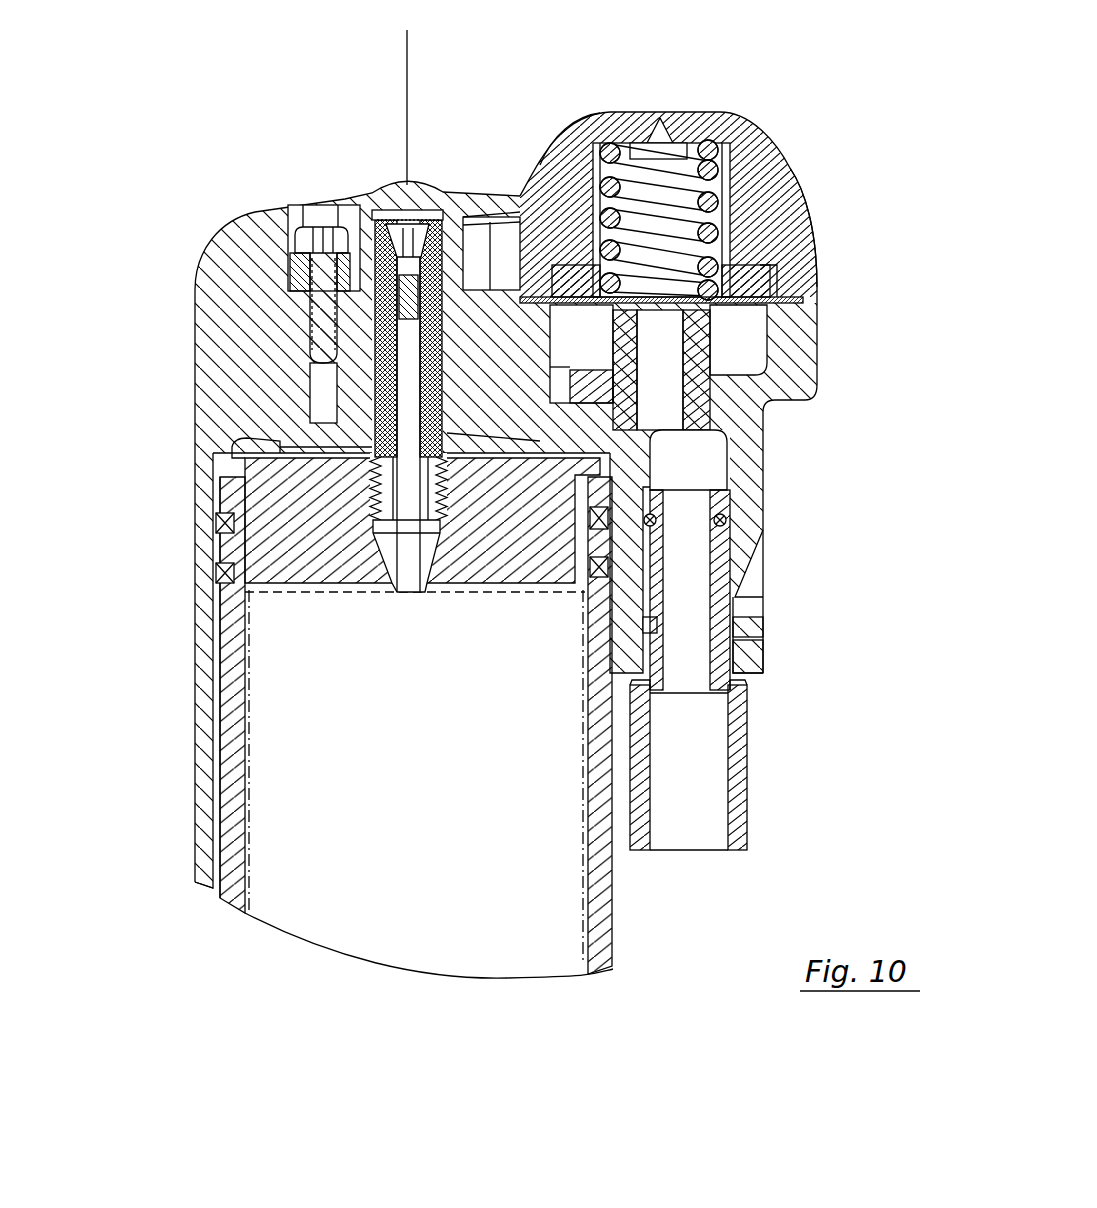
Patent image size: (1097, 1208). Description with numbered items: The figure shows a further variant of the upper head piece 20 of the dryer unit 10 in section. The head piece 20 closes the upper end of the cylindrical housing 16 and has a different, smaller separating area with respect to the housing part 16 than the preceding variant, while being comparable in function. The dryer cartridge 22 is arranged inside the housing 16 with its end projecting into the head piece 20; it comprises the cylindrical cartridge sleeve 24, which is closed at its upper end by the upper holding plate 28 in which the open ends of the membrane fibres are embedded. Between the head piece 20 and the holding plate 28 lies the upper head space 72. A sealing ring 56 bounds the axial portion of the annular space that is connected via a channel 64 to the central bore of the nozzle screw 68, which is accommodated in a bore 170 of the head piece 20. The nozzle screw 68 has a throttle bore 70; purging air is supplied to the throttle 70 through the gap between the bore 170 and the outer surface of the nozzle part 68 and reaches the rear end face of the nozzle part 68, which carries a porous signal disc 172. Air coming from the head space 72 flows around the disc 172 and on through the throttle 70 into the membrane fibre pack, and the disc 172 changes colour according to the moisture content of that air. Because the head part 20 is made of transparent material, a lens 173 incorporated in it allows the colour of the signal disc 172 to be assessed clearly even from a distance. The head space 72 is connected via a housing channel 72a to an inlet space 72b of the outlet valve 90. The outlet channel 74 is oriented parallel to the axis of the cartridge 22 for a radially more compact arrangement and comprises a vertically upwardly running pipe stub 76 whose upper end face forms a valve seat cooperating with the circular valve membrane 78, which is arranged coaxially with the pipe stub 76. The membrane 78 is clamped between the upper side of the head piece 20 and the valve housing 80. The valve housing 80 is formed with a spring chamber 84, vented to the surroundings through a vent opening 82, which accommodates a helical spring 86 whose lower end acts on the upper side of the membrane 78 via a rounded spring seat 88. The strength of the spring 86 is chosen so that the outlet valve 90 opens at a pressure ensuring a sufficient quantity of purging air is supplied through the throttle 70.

The dryer unit 10 is at (255, 985).
The cylindrical housing 16 is at (190, 383).
The upper head piece 20 is at (797, 174).
The dryer cartridge 22 is at (410, 932).
The cartridge sleeve 24 is at (597, 935).
The upper holding plate 28 is at (547, 550).
The sealing ring 56 is at (225, 572).
The channel 64 is at (390, 578).
The nozzle screw 68 is at (362, 388).
The throttle bore 70 is at (385, 300).
The upper head space 72 is at (335, 458).
The housing channel 72a is at (497, 333).
The inlet space 72b is at (750, 330).
The outlet channel 74 is at (762, 424).
The pipe stub 76 is at (745, 383).
The valve membrane 78 is at (780, 243).
The valve housing 80 is at (720, 113).
The vent opening 82 is at (657, 113).
The spring chamber 84 is at (748, 265).
The helical spring 86 is at (698, 296).
The spring seat 88 is at (799, 195).
The outlet valve 90 is at (575, 120).
The bore 170 is at (367, 332).
The porous signal disc 172 is at (395, 185).
The lens 173 is at (393, 175).